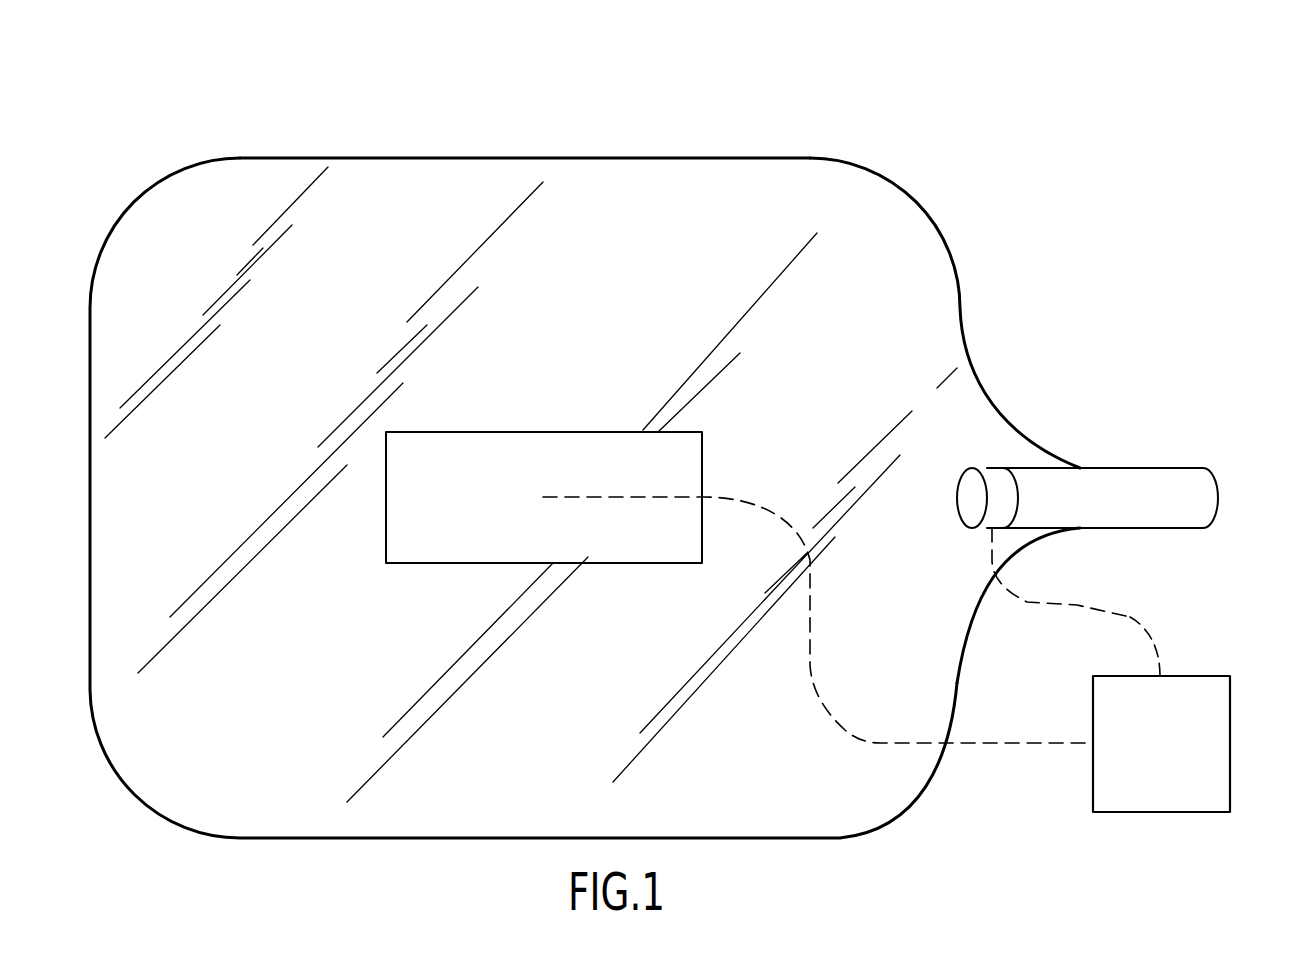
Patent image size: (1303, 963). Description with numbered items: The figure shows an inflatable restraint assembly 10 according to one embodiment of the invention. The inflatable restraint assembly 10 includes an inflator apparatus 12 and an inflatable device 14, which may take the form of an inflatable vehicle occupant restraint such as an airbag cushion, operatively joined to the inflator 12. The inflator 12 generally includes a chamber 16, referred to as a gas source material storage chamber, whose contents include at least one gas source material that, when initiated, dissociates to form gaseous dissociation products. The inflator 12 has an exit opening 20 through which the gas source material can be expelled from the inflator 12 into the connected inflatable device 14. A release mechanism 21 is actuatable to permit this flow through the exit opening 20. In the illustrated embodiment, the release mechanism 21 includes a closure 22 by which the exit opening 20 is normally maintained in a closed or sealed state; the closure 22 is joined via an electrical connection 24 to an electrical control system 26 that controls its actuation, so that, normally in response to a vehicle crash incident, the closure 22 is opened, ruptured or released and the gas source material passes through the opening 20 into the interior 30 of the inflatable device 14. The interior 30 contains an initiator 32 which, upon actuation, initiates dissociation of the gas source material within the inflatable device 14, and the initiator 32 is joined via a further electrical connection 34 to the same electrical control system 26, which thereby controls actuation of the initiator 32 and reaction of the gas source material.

The inflatable restraint assembly 10 is at (634, 431).
The inflator apparatus 12 is at (1104, 467).
The inflatable device 14 is at (357, 158).
The chamber 16 is at (1122, 507).
The exit opening 20 is at (1027, 493).
The release mechanism 21 is at (1001, 603).
The closure 22 is at (998, 478).
The electrical connection 24 is at (1152, 638).
The electrical control system 26 is at (1161, 744).
The interior 30 is at (574, 218).
The initiator 32 is at (512, 460).
The electrical connection 34 is at (983, 745).